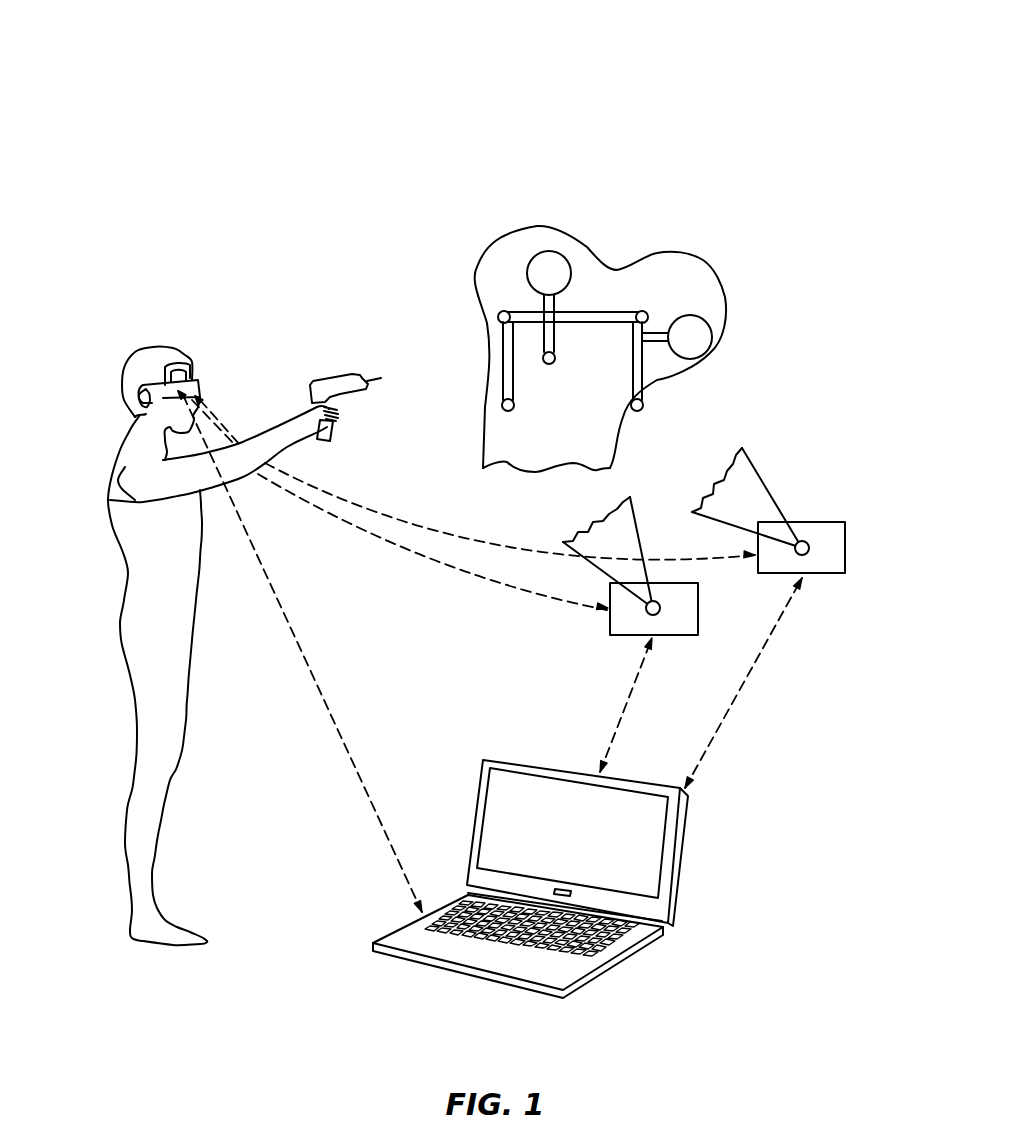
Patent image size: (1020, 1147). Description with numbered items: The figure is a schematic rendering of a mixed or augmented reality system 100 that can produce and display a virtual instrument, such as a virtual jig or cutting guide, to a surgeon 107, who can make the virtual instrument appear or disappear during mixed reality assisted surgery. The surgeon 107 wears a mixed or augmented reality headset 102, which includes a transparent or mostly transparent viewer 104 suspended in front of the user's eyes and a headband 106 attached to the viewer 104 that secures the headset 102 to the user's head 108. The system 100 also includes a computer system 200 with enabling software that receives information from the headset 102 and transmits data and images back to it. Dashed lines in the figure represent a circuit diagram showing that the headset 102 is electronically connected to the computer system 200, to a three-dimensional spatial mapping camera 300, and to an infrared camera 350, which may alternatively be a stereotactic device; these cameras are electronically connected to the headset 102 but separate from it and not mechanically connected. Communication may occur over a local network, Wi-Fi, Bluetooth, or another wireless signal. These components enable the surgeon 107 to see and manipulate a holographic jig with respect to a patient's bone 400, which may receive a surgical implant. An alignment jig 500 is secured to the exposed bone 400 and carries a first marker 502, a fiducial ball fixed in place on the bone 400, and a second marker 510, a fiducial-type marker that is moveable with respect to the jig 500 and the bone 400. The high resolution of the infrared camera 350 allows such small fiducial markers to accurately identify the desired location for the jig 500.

The mixed or augmented reality system 100 is at (313, 145).
The surgeon 107 is at (93, 362).
The user's head 108 is at (137, 368).
The headband 106 is at (158, 380).
The mixed or augmented reality headset 102 is at (193, 360).
The viewer 104 is at (201, 386).
The computer system 200 is at (552, 772).
The 3D spatial mapping camera 300 is at (838, 530).
The infrared camera 350 is at (688, 612).
The bone 400 is at (648, 253).
The alignment jig 500 is at (645, 388).
The first marker 502 is at (695, 317).
The second marker 510 is at (540, 252).